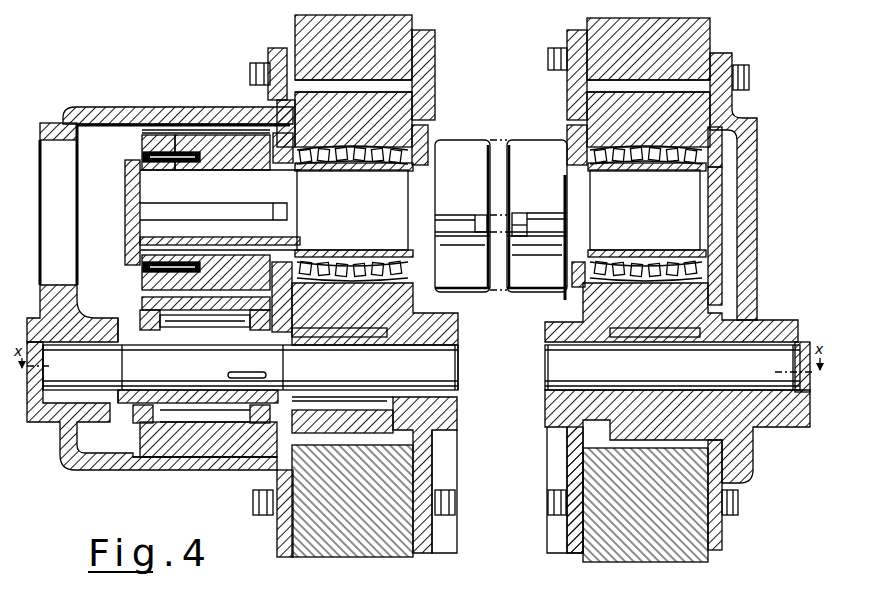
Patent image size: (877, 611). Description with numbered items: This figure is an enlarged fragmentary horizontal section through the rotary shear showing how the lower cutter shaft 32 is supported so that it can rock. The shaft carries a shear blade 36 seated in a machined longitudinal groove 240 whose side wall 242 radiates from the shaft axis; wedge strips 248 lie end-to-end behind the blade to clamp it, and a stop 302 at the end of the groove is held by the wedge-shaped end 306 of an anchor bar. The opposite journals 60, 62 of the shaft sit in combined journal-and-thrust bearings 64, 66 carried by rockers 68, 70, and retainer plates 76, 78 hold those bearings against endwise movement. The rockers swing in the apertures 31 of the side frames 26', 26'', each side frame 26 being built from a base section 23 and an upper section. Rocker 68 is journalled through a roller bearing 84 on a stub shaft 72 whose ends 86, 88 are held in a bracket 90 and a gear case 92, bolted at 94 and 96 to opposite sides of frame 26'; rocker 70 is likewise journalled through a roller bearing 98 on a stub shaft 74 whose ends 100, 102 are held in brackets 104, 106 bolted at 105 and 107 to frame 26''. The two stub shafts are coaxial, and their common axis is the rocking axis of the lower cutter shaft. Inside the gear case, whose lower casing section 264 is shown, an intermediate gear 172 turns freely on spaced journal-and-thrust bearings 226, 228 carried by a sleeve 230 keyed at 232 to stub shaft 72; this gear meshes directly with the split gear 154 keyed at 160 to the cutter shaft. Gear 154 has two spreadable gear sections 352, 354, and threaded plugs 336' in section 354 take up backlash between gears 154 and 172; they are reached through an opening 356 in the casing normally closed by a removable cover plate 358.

The base section 23 is at (372, 545).
The side frame 26 is at (432, 515).
The side frame 26' is at (333, 81).
The side frame 26'' is at (668, 78).
The aperture 31 is at (390, 84).
The lower cutter shaft 32 is at (516, 137).
The shear blade 36 is at (527, 226).
The journal 60 is at (370, 212).
The journal 62 is at (666, 212).
The journal-and-thrust bearing 64 is at (355, 166).
The journal-and-thrust bearing 66 is at (645, 166).
The rocker 68 is at (398, 300).
The rocker 70 is at (281, 166).
The stub shaft 72 is at (342, 369).
The stub shaft 74 is at (666, 370).
The retainer plate 76 is at (430, 141).
The retainer plate 78 is at (567, 135).
The roller bearing 84 is at (355, 337).
The end 86 is at (445, 371).
The end 88 is at (27, 366).
The bracket 90 is at (457, 421).
The gear case 92 is at (68, 476).
The bolts 94 is at (455, 505).
The bolts 96 is at (252, 72).
The roller bearing 98 is at (675, 337).
The end 100 is at (556, 372).
The end 102 is at (767, 362).
The bracket 104 is at (547, 431).
The bolts 105 is at (556, 58).
The bracket 106 is at (748, 437).
The bolts 107 is at (750, 78).
The gear 154 is at (190, 130).
The key 160 is at (210, 214).
The intermediate gear 172 is at (138, 300).
The journal-and-thrust bearing 226 is at (148, 331).
The journal-and-thrust bearing 228 is at (262, 331).
The sleeve 230 is at (185, 331).
The key 232 is at (231, 373).
The groove 240 is at (487, 212).
The side wall 242 is at (532, 213).
The wedge strips 248 is at (517, 242).
The casing section 264 is at (143, 470).
The stop 302 is at (452, 228).
The wedge-shaped end 306 is at (456, 243).
The threaded plugs 336' is at (149, 211).
The gear section 352 is at (228, 135).
The gear section 354 is at (157, 135).
The opening 356 is at (60, 285).
The cover plate 358 is at (40, 142).